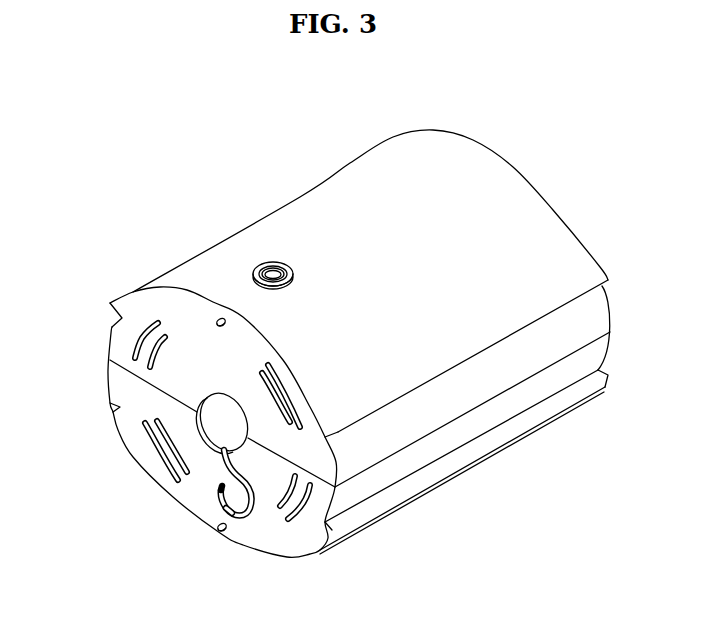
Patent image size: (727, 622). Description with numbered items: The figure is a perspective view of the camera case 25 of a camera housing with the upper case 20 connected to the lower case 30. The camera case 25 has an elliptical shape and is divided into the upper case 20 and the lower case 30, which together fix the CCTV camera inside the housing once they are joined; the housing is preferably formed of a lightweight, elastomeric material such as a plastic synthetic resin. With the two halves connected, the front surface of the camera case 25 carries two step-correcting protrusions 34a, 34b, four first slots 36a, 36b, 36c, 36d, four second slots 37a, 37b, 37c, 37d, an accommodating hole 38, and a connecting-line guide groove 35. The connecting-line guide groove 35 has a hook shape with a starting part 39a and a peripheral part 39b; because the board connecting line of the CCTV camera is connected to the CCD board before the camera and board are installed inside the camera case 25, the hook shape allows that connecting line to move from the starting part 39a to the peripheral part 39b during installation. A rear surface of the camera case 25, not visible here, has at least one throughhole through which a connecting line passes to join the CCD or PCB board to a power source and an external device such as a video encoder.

The upper case 20 is at (515, 188).
The camera case 25 is at (312, 160).
The lower case 30 is at (565, 403).
The step-correcting protrusion 34a is at (220, 317).
The step-correcting protrusion 34b is at (223, 534).
The connecting-line guide groove 35 is at (261, 530).
The first slot 36a is at (310, 522).
The first slot 36b is at (272, 364).
The first slot 36c is at (148, 320).
The first slot 36d is at (148, 437).
The second slot 37a is at (296, 473).
The second slot 37b is at (264, 372).
The second slot 37c is at (168, 330).
The second slot 37d is at (150, 417).
The accommodating hole 38 is at (110, 371).
The starting part 39a is at (217, 495).
The peripheral part 39b is at (224, 486).